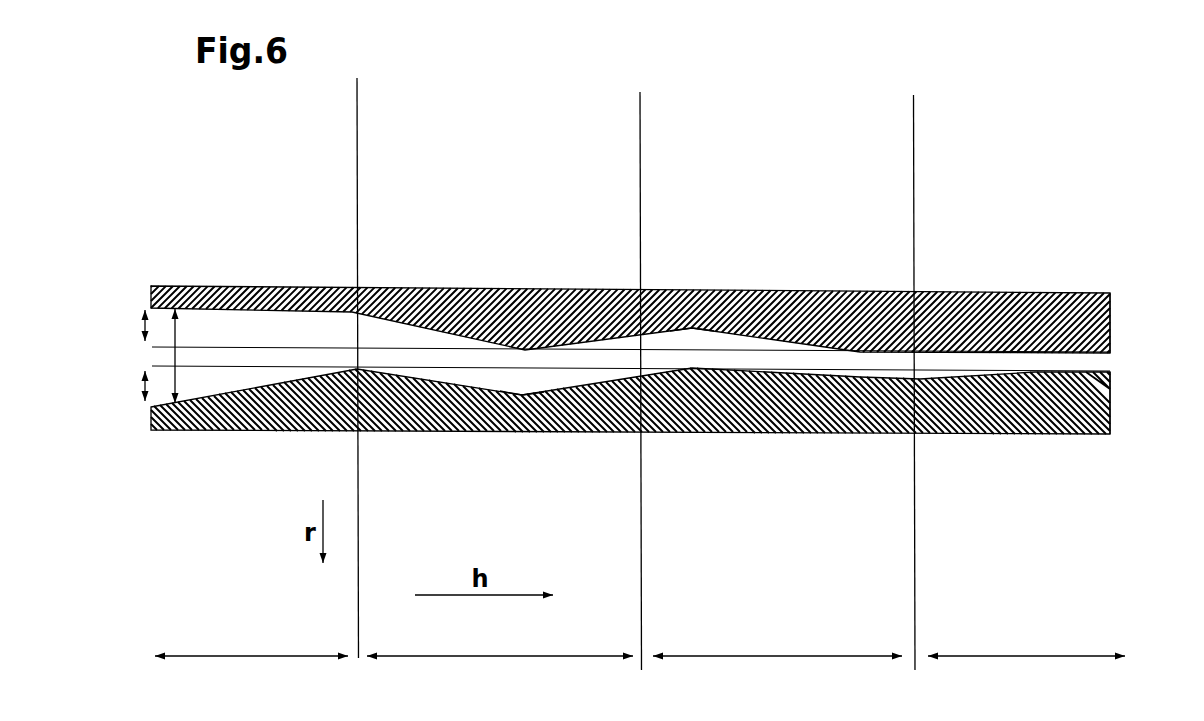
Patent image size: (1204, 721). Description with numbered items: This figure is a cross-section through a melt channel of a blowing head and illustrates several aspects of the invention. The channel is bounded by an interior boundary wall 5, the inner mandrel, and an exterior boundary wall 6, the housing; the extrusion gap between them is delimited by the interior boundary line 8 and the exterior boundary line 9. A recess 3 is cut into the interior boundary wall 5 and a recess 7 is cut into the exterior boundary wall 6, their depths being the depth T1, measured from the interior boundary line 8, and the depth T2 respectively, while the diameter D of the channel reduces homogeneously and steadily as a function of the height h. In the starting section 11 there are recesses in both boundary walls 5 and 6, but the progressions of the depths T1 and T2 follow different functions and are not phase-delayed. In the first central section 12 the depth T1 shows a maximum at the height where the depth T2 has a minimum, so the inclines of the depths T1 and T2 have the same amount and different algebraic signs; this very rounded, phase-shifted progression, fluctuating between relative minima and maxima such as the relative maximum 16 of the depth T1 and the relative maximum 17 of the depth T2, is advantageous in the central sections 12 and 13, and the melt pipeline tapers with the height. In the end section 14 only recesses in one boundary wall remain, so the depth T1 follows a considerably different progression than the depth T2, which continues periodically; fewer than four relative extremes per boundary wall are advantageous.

The recess/groove in the interior boundary wall 3 is at (208, 372).
The interior boundary wall 5 is at (1000, 378).
The exterior boundary wall 6 is at (887, 295).
The recess/groove in the exterior boundary wall 7 is at (303, 323).
The interior boundary line of the extrusion gap 8 is at (1110, 353).
The exterior boundary line of the extrusion gap 9 is at (1113, 378).
The starting section 11 is at (257, 385).
The first central section 12 is at (504, 392).
The second central section 13 is at (784, 396).
The end section 14 is at (1026, 677).
The relative maximum T1 16 is at (522, 395).
The relative maximum T2 17 is at (692, 328).
The diameter of the channel D is at (175, 350).
The depth of the recess in the interior boundary wall T1 is at (140, 387).
The depth of the recess in the exterior boundary wall T2 is at (141, 325).